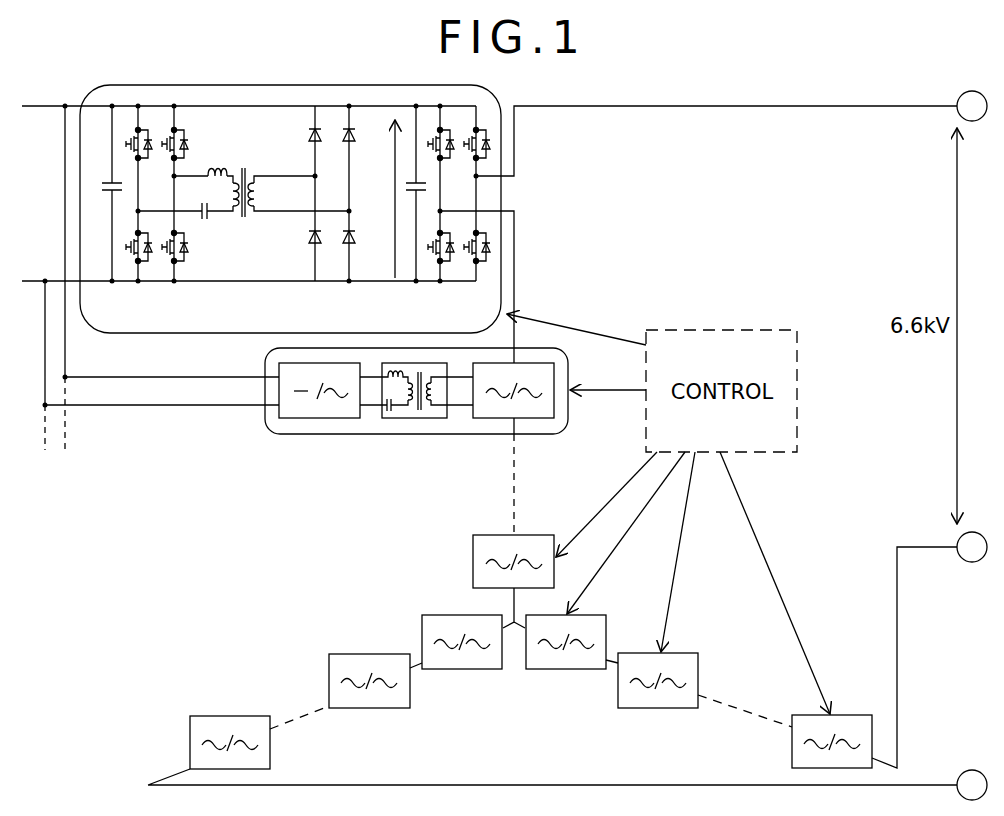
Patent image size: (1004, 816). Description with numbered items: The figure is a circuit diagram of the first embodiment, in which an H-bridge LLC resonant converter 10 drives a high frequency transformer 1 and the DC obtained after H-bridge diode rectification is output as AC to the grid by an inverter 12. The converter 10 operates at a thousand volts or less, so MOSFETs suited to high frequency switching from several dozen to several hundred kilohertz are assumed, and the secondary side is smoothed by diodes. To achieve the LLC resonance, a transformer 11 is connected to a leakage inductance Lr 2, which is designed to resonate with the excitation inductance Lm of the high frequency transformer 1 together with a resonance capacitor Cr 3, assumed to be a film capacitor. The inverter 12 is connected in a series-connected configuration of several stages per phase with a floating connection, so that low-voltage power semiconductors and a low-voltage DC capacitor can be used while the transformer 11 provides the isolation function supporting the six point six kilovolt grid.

The high frequency transformer 1 is at (247, 167).
The leakage inductance Lr 2 is at (220, 168).
The resonance capacitor Cr 3 is at (207, 217).
The H-bridge LLC resonant converter 10 is at (185, 286).
The transformer 11 is at (243, 203).
The inverter 12 is at (307, 286).